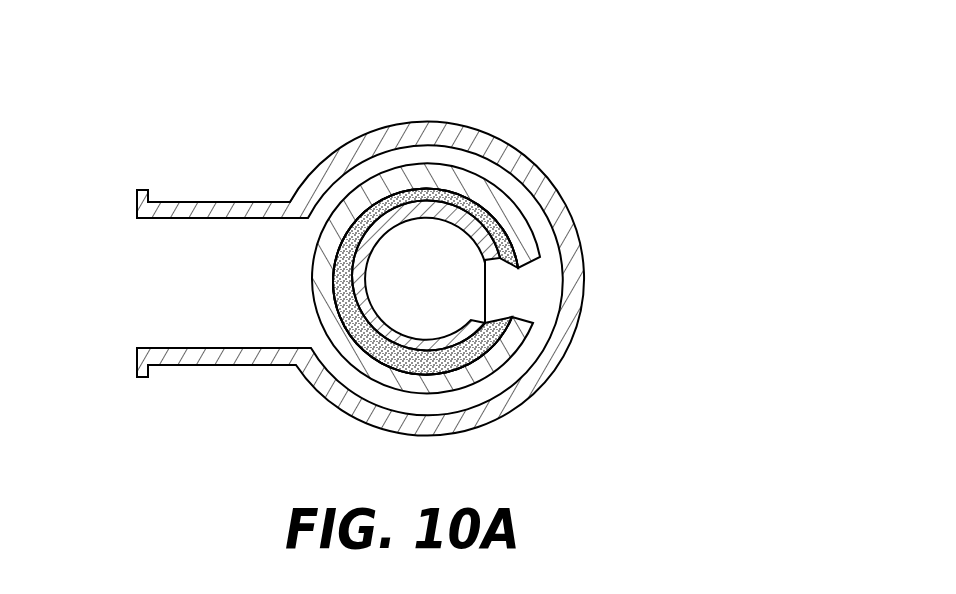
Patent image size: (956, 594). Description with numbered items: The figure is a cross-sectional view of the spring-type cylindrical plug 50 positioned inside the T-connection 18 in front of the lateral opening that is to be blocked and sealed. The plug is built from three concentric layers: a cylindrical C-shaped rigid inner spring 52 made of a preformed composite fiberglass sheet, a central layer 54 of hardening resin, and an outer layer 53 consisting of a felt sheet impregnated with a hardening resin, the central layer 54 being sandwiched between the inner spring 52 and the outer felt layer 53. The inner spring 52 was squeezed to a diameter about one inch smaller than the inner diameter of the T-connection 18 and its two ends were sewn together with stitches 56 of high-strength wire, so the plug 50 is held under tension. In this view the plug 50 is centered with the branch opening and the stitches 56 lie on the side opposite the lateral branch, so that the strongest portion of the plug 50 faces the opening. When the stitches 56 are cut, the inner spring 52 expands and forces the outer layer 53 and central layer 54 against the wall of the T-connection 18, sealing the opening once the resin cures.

The T-connection 18 is at (533, 187).
The spring-type cylindrical plug 50 is at (522, 357).
The cylindrical C-shaped rigid inner spring 52 is at (460, 358).
The outer layer 53 is at (457, 190).
The central layer 54 is at (418, 188).
The stitches 56 is at (487, 290).